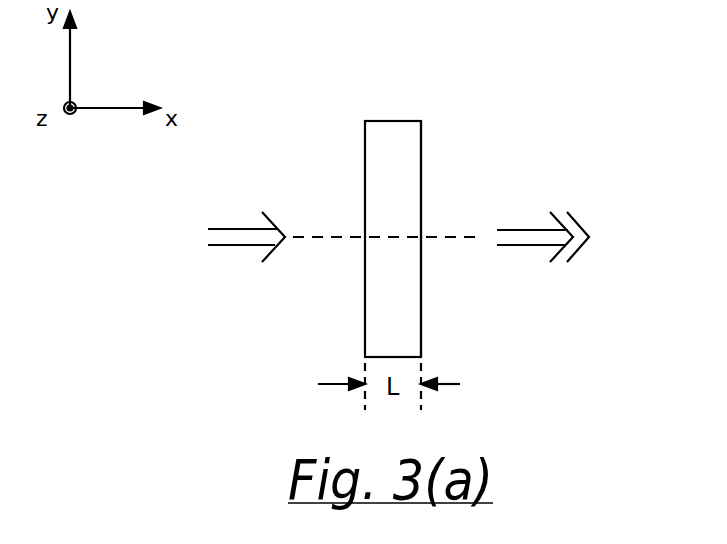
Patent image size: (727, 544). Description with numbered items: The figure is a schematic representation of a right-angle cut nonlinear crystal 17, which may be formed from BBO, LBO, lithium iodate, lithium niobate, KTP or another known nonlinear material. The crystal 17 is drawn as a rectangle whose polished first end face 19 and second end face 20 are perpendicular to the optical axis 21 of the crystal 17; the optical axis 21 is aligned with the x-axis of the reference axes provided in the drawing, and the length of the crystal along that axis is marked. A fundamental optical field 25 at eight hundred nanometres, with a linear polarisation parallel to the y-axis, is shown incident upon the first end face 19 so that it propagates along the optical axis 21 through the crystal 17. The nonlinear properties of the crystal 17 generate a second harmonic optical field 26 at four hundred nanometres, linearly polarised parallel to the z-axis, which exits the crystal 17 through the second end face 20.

The right-angle cut nonlinear crystal 17 is at (526, 311).
The first end face 19 is at (365, 148).
The second end face 20 is at (421, 148).
The optical axis 21 is at (451, 237).
The fundamental optical field 25 is at (228, 245).
The second harmonic optical field 26 is at (517, 230).